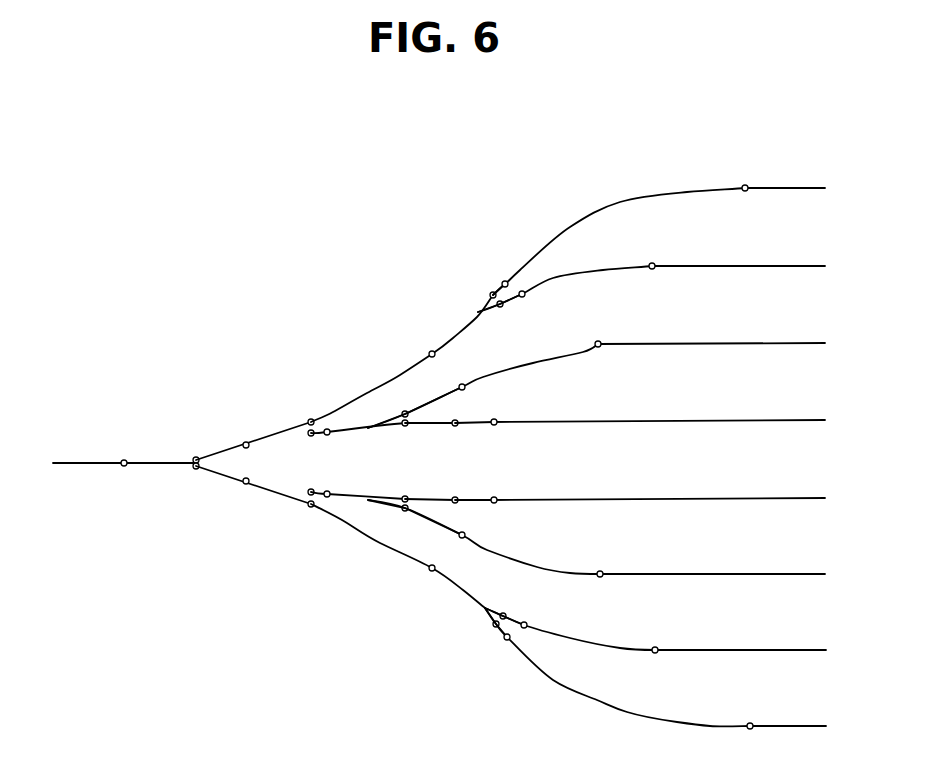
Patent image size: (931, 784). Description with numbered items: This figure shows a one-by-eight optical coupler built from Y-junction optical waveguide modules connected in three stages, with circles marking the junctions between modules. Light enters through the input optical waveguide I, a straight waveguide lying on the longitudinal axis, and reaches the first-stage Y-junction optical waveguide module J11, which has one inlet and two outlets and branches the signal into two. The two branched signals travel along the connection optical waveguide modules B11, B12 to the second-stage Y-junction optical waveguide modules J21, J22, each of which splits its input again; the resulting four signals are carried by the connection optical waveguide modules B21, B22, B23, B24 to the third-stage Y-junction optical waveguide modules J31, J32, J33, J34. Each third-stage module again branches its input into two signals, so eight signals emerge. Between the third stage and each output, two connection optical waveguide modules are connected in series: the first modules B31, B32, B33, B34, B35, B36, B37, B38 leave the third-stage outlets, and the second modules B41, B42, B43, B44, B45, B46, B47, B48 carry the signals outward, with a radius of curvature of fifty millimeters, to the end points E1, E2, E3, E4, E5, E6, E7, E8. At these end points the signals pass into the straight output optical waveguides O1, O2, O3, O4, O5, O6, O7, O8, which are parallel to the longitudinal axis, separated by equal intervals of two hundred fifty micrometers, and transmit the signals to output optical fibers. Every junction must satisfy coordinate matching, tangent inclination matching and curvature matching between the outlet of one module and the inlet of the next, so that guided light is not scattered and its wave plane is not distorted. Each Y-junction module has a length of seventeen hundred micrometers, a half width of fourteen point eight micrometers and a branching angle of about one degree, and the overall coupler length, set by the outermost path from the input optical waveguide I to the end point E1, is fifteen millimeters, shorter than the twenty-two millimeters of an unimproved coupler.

The input optical waveguide I is at (124, 477).
The Y-junction optical waveguide module J11 is at (173, 476).
The connection optical waveguide module B11 is at (253, 441).
The connection optical waveguide module B12 is at (253, 487).
The Y-junction optical waveguide module J21 is at (286, 421).
The Y-junction optical waveguide module J22 is at (284, 506).
The connection optical waveguide module B21 is at (402, 358).
The connection optical waveguide module B22 is at (328, 435).
The connection optical waveguide module B23 is at (318, 490).
The connection optical waveguide module B24 is at (398, 556).
The Y-junction optical waveguide module J31 is at (469, 310).
The Y-junction optical waveguide module J32 is at (382, 434).
The Y-junction optical waveguide module J33 is at (382, 490).
The Y-junction optical waveguide module J34 is at (471, 611).
The connection optical waveguide module B31 is at (500, 288).
The connection optical waveguide module B32 is at (509, 302).
The connection optical waveguide module B33 is at (416, 400).
The connection optical waveguide module B34 is at (431, 439).
The connection optical waveguide module B35 is at (431, 486).
The connection optical waveguide module B36 is at (416, 525).
The connection optical waveguide module B37 is at (513, 604).
The connection optical waveguide module B38 is at (498, 629).
The connection optical waveguide module B41 is at (619, 241).
The connection optical waveguide module B42 is at (565, 289).
The connection optical waveguide module B43 is at (483, 386).
The connection optical waveguide module B44 is at (476, 408).
The connection optical waveguide module B45 is at (476, 485).
The connection optical waveguide module B46 is at (484, 537).
The connection optical waveguide module B47 is at (570, 629).
The connection optical waveguide module B48 is at (617, 670).
The end point E1 is at (743, 202).
The end point E2 is at (648, 284).
The end point E3 is at (598, 362).
The end point E4 is at (494, 438).
The end point E5 is at (496, 516).
The end point E6 is at (599, 562).
The end point E7 is at (653, 667).
The end point E8 is at (749, 744).
The output optical waveguide O1 is at (785, 172).
The output optical waveguide O2 is at (738, 250).
The output optical waveguide O3 is at (711, 328).
The output optical waveguide O4 is at (659, 406).
The output optical waveguide O5 is at (659, 483).
The output optical waveguide O6 is at (712, 559).
The output optical waveguide O7 is at (740, 635).
The output optical waveguide O8 is at (788, 712).